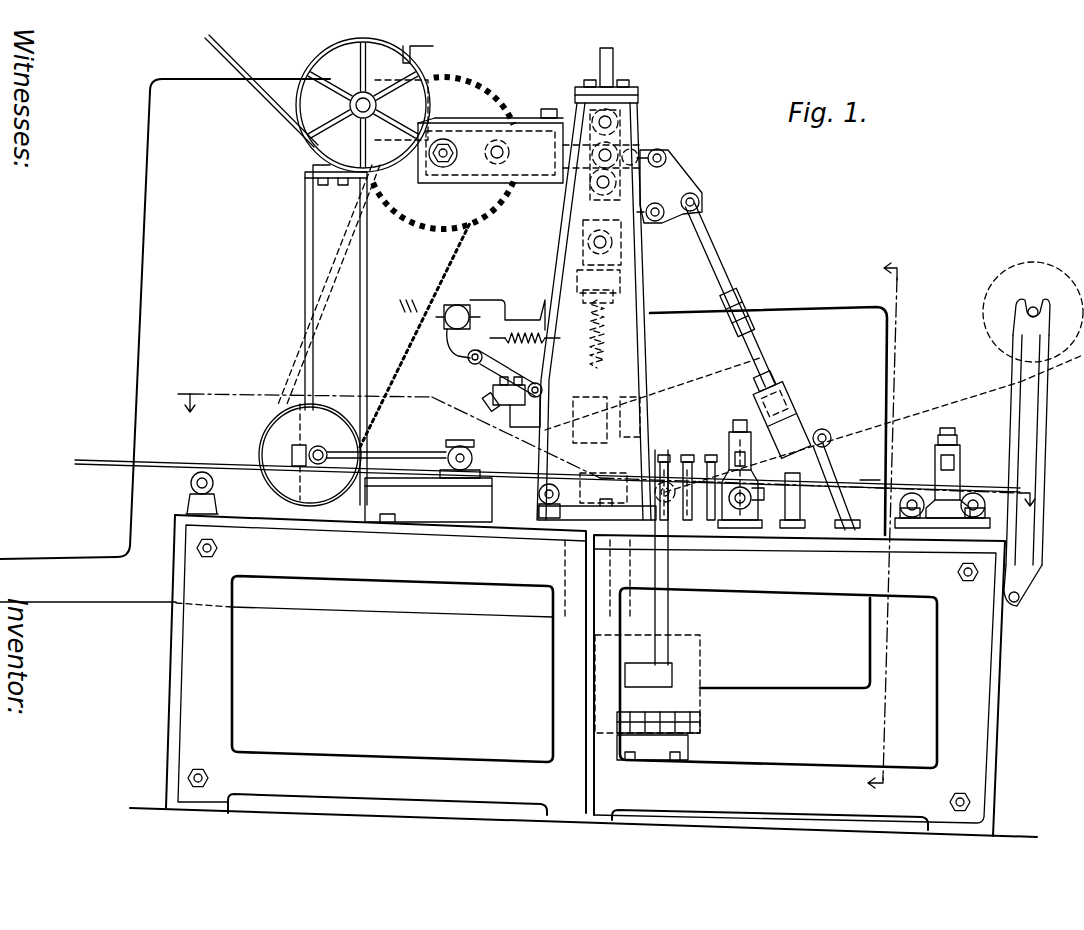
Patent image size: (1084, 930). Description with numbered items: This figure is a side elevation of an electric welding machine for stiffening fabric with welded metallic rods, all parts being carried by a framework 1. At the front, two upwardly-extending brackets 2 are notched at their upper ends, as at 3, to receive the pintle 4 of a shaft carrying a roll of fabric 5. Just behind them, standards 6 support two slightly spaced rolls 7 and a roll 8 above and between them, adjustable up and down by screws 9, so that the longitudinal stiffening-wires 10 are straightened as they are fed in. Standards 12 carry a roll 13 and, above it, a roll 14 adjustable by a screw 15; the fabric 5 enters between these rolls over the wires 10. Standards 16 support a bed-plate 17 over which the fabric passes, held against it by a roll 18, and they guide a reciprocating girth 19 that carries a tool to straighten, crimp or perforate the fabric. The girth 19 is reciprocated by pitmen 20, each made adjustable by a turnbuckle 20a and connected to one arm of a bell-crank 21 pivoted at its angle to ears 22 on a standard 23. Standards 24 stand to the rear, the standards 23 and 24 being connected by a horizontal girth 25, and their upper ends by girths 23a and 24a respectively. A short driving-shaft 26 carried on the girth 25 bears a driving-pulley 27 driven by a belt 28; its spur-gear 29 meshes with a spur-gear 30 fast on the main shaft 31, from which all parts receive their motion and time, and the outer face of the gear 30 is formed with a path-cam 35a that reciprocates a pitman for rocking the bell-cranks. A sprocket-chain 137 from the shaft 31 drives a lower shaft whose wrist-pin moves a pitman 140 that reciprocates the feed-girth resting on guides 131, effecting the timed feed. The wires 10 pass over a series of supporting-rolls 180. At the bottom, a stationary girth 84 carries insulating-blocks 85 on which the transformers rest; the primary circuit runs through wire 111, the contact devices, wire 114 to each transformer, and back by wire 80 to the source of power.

The framework 1 is at (995, 762).
The brackets 2 is at (1014, 596).
The notch 3 is at (1043, 312).
The pintle 4 is at (1035, 306).
The fabric 5 is at (1003, 265).
The standards 6 is at (944, 528).
The rolls 7 is at (906, 492).
The roll 8 is at (958, 462).
The screws 9 is at (945, 428).
The longitudinal stiffening-wires 10 is at (170, 460).
The standards 12 is at (740, 525).
The roll 13 is at (771, 505).
The roll 14 is at (714, 452).
The screw 15 is at (741, 420).
The standards 16 is at (818, 515).
The bed-plate 17 is at (863, 463).
The roll 18 is at (827, 430).
The reciprocating girth 19 is at (802, 400).
The pitmen 20 is at (720, 253).
The turnbuckle 20a is at (752, 280).
The bell-crank 21 is at (662, 183).
The ears 22 is at (647, 230).
The standard 23 is at (632, 352).
The girth 23a is at (618, 68).
The standards 24 is at (303, 290).
The girth 24a is at (433, 48).
The horizontal girth 25 is at (539, 184).
The driving-shaft 26 is at (357, 108).
The driving-pulley 27 is at (330, 58).
The belt 28 is at (296, 62).
The spur-gear 29 is at (311, 181).
The spur-gear 30 is at (478, 96).
The main shaft 31 is at (443, 165).
The path-cam 35a is at (467, 225).
The wire 80 is at (88, 605).
The stationary girth 84 is at (690, 746).
The insulating-blocks 85 is at (700, 722).
The wire 111 is at (403, 313).
The wire 114 is at (877, 311).
The guides 131 is at (428, 490).
The sprocket-chain 137 is at (292, 357).
The pitman 140 is at (448, 452).
The supporting-rolls 180 is at (188, 483).